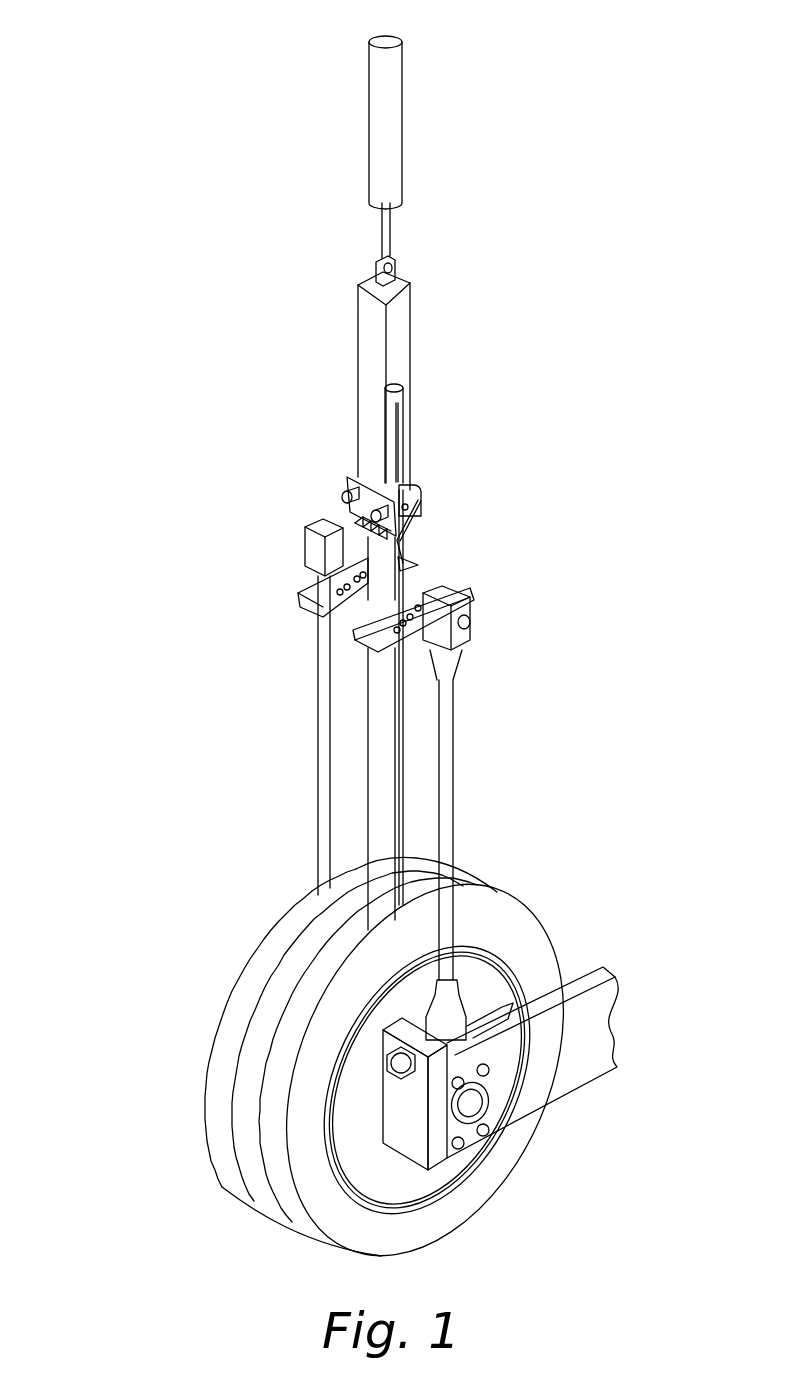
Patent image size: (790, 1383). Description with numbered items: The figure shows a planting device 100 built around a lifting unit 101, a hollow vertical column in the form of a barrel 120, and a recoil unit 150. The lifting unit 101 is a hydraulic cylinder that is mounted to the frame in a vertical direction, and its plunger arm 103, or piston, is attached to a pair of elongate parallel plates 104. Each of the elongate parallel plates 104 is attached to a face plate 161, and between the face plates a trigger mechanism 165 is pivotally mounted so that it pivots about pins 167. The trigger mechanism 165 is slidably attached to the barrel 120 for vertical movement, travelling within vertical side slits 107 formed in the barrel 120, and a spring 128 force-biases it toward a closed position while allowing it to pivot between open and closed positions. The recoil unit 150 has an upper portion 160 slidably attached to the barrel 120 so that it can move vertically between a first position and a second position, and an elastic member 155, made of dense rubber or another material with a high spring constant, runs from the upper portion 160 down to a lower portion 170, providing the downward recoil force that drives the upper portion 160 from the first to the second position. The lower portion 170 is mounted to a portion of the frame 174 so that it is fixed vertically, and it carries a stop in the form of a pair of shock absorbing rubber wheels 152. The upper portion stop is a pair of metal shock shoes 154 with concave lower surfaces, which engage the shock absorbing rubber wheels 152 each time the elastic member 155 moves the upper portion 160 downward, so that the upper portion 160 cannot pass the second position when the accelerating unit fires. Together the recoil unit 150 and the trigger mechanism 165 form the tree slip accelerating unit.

The planting device 100 is at (124, 48).
The lifting unit 101 is at (348, 122).
The plunger arm 103 is at (392, 238).
The elongate parallel plates 104 is at (412, 318).
The vertical side slits 107 is at (398, 446).
The barrel 120 is at (378, 770).
The spring 128 is at (356, 521).
The recoil unit 150 is at (640, 572).
The shock absorbing rubber wheels 152 is at (275, 943).
The shock shoes 154 is at (447, 579).
The elastic member 155 is at (320, 712).
The upper portion 160 is at (514, 606).
The face plate 161 is at (425, 497).
The trigger mechanism 165 is at (405, 527).
The pins 167 is at (350, 490).
The lower portion 170 is at (568, 901).
The frame 174 is at (583, 1057).